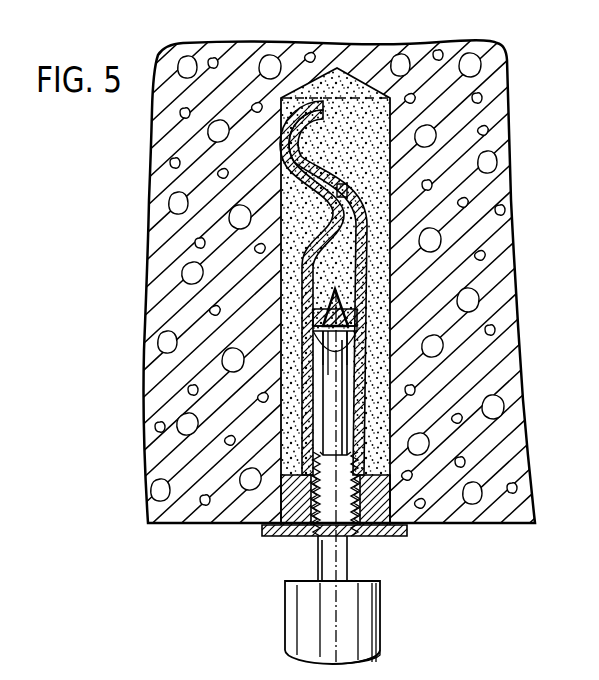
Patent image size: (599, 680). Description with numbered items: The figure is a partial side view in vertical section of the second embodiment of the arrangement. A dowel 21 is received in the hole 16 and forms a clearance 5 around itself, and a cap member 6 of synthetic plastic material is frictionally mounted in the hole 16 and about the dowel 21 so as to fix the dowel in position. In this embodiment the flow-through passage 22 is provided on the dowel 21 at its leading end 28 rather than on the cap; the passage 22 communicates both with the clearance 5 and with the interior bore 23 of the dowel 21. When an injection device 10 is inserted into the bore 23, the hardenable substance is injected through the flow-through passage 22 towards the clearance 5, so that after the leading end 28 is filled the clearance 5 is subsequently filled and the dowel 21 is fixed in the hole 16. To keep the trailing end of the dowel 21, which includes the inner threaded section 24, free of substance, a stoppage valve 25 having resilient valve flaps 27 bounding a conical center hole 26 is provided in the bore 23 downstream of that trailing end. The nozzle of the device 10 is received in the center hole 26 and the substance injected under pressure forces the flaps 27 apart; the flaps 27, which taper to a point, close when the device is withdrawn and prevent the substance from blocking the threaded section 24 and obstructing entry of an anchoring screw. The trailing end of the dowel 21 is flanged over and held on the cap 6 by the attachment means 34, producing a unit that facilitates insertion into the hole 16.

The clearance 5 is at (387, 251).
The hole 16 is at (381, 88).
The leading end 28 is at (326, 257).
The dowel 21 is at (362, 222).
The flow-through passage 22 is at (342, 188).
The resilient valve flaps 27 is at (351, 298).
The stoppage valve 25 is at (313, 360).
The conical center hole 26 is at (301, 345).
The interior bore 23 is at (288, 410).
The inner threaded section 24 is at (320, 522).
The cap member 6 is at (282, 527).
The attachment means 34 is at (356, 526).
The injection device 10 is at (362, 598).